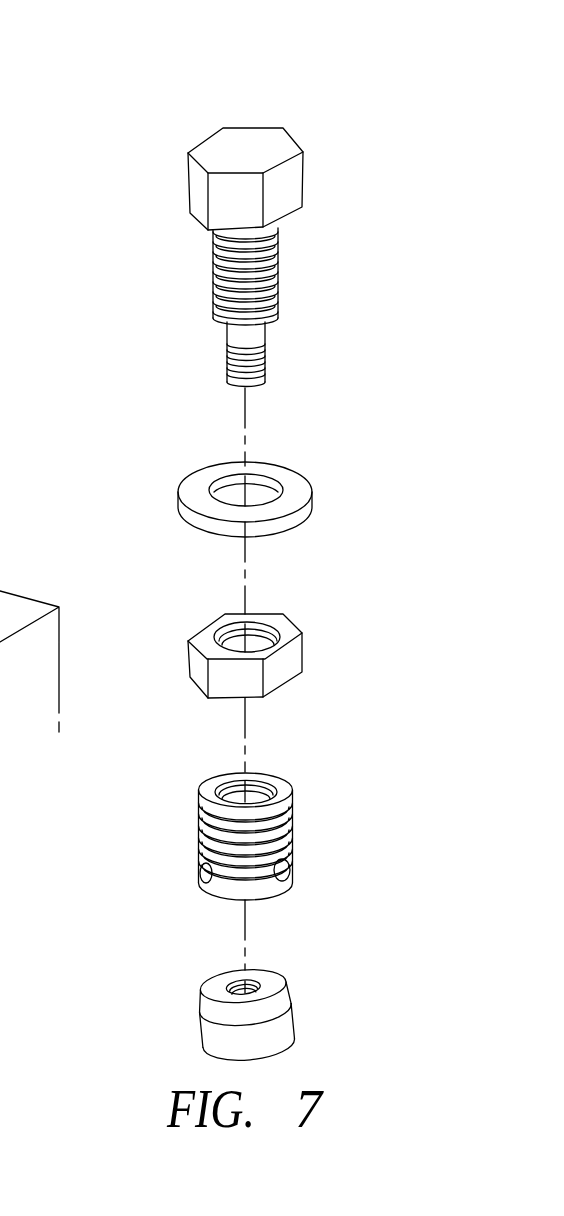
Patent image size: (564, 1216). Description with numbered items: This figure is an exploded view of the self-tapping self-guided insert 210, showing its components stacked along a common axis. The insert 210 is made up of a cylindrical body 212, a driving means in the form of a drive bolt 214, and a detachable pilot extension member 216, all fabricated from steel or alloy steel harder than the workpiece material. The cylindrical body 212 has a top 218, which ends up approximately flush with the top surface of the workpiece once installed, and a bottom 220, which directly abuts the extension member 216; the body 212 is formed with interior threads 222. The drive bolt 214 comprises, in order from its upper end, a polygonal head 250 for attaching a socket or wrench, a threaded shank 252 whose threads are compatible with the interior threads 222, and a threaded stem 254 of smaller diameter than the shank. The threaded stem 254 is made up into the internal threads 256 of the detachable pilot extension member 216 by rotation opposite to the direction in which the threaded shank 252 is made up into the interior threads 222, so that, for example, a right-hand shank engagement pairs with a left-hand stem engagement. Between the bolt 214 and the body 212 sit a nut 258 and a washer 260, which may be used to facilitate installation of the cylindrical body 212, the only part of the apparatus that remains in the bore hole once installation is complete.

The self-tapping self-guided insert 210 is at (158, 172).
The cylindrical body 212 is at (192, 852).
The drive bolt 214 is at (197, 247).
The detachable pilot extension member 216 is at (190, 1038).
The top 218 is at (293, 778).
The bottom 220 is at (292, 880).
The interior threads 222 is at (255, 782).
The polygonal head 250 is at (290, 190).
The threaded shank 252 is at (278, 287).
The threaded stem 254 is at (265, 367).
The internal threads 256 is at (253, 977).
The nut 258 is at (293, 657).
The washer 260 is at (307, 507).